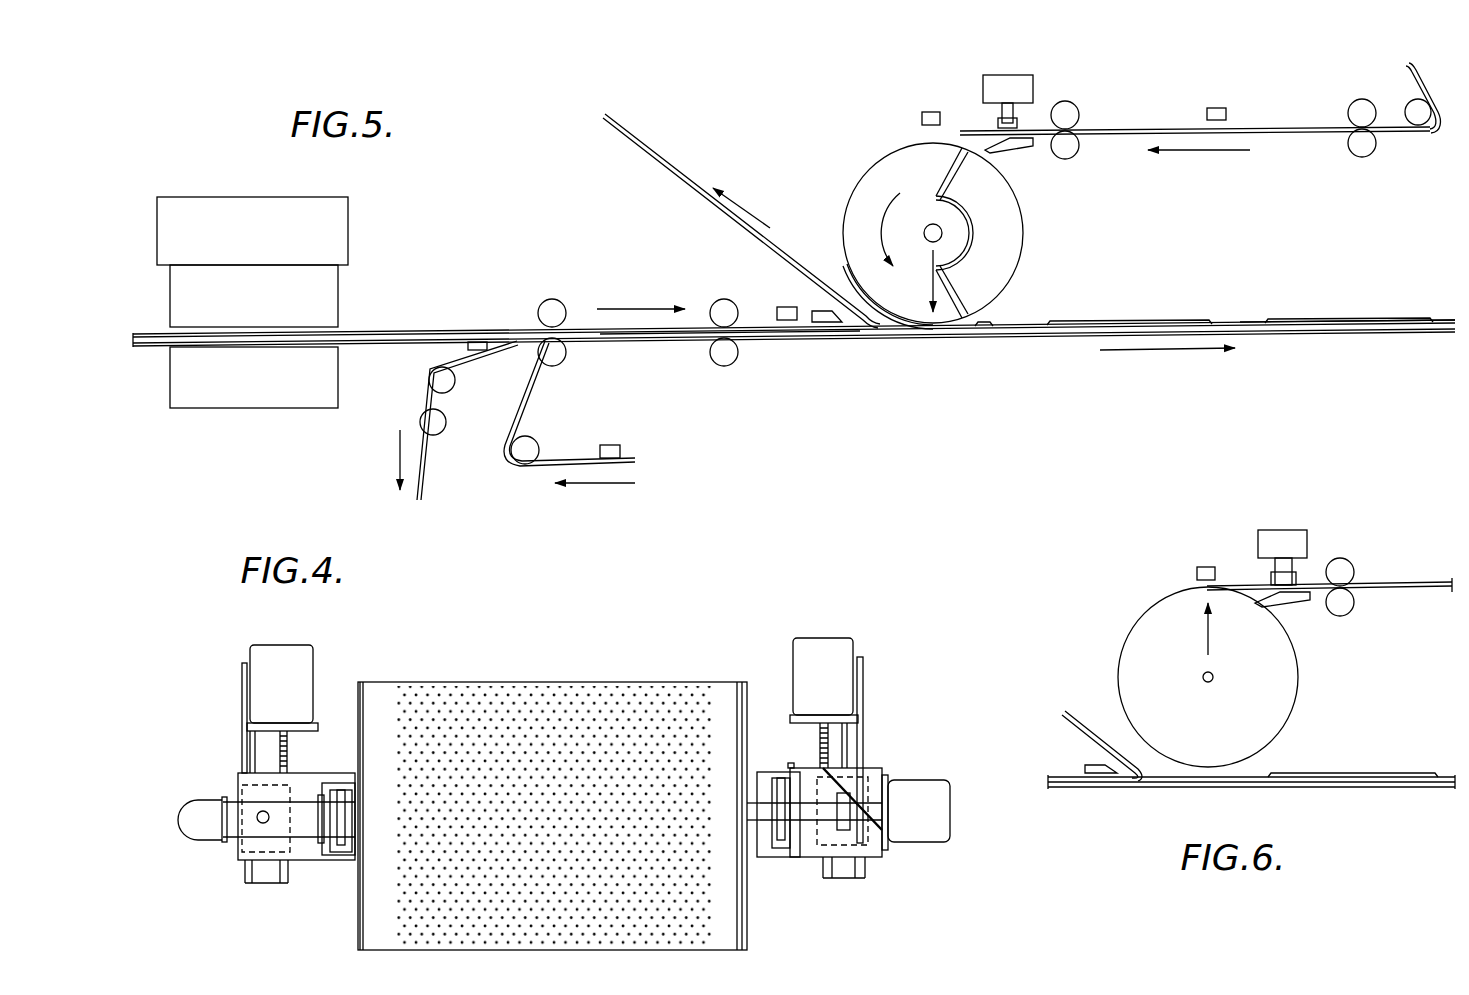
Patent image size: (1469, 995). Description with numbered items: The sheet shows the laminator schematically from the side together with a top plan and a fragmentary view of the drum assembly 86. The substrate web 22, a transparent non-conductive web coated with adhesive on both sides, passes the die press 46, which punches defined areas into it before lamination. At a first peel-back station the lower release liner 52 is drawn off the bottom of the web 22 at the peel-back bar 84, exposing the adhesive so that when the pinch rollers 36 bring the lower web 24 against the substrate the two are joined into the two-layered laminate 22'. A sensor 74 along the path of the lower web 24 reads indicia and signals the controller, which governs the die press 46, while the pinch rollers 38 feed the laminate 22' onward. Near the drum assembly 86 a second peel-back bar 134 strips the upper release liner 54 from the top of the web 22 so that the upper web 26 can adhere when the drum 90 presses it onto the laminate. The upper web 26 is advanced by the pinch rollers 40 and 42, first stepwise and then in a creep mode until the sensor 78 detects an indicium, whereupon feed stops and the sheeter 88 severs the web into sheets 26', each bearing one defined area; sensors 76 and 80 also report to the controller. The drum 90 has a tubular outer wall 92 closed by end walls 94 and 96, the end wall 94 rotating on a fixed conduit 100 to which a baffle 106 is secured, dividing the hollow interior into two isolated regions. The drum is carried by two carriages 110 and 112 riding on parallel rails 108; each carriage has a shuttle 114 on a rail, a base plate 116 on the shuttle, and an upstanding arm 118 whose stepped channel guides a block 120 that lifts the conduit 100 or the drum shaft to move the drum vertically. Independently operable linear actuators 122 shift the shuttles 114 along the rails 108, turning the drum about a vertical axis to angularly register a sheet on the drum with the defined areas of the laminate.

In FIG. 5, the web 22 is at (794, 309).
In FIG. 5, the two-layered laminate 22' is at (730, 370).
In FIG. 6, the two-layered laminate 22' is at (1249, 805).
In FIG. 5, the lower web 24 is at (527, 408).
In FIG. 5, the upper web 26 is at (1195, 160).
In FIG. 6, the upper web 26 is at (1329, 611).
In FIG. 5, the sheets 26' is at (1113, 264).
In FIG. 6, the sheets 26' is at (1353, 755).
In FIG. 5, the pinch rollers 36 is at (558, 298).
In FIG. 5, the pinch rollers 38 is at (703, 298).
In FIG. 5, the pinch rollers 40 is at (1380, 157).
In FIG. 5, the pinch rollers 42 is at (1087, 102).
In FIG. 6, the pinch rollers 42 is at (1356, 565).
In FIG. 5, the die press 46 is at (358, 242).
In FIG. 5, the lower release liner 52 is at (415, 396).
In FIG. 5, the upper release liner 54 is at (648, 157).
In FIG. 6, the upper release liner 54 is at (1068, 710).
In FIG. 5, the sensor 74 is at (628, 443).
In FIG. 5, the sensor 76 is at (778, 303).
In FIG. 5, the sensor 78 is at (1233, 103).
In FIG. 5, the sensor 80 is at (915, 117).
In FIG. 6, the sensor 80 is at (1190, 565).
In FIG. 5, the peel-back bar 84 is at (487, 342).
In FIG. 5, the drum assembly 86 is at (866, 148).
In FIG. 6, the drum assembly 86 is at (1128, 620).
In FIG. 4, the drum assembly 86 is at (512, 655).
In FIG. 5, the sheeter 88 is at (978, 85).
In FIG. 6, the sheeter 88 is at (1287, 525).
In FIG. 5, the drum 90 is at (1032, 225).
In FIG. 4, the drum 90 is at (585, 672).
In FIG. 4, the tubular outer wall 92 is at (655, 690).
In FIG. 4, the end wall 94 is at (358, 720).
In FIG. 4, the end wall 96 is at (748, 705).
In FIG. 4, the conduit 100 is at (232, 800).
In FIG. 5, the baffle 106 is at (962, 302).
In FIG. 4, the rails 108 is at (262, 883).
In FIG. 4, the carriage 110 is at (228, 762).
In FIG. 4, the carriage 112 is at (900, 765).
In FIG. 4, the shuttle 114 is at (245, 845).
In FIG. 4, the base plate 116 is at (302, 860).
In FIG. 4, the arm 118 is at (345, 855).
In FIG. 4, the block 120 is at (318, 795).
In FIG. 4, the linear actuators 122 is at (282, 655).
In FIG. 5, the peel-back bar 134 is at (825, 320).
In FIG. 6, the peel-back bar 134 is at (1095, 768).